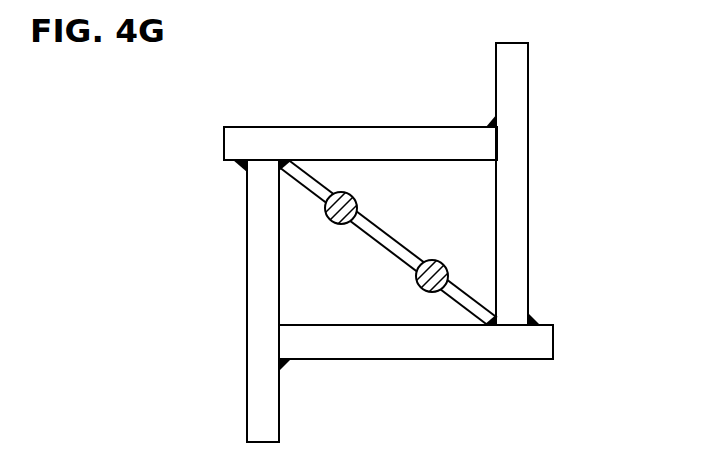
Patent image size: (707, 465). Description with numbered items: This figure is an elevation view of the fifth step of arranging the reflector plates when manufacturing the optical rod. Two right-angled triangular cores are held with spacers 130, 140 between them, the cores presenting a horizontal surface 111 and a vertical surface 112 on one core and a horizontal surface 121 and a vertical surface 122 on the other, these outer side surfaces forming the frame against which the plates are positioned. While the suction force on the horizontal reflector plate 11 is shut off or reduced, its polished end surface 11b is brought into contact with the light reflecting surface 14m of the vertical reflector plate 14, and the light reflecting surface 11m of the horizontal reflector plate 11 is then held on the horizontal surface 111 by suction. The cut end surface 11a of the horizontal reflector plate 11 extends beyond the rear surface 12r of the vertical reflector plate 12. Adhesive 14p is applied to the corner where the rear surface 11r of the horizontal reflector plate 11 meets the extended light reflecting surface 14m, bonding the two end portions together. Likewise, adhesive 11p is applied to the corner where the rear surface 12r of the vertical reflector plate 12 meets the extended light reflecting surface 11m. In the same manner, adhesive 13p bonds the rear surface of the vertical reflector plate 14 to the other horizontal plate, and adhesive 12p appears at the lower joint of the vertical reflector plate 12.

The horizontal reflector plate 11 is at (278, 148).
The cut end surface 11a is at (224, 146).
The polished end surface 11b is at (494, 147).
The light reflecting surface 11m is at (238, 167).
The adhesive 11p is at (244, 179).
The rear surface 11r is at (463, 127).
The vertical reflector plate 12 is at (262, 280).
The projection of second side member 12p is at (284, 370).
The rear surface 12r is at (247, 247).
The adhesive 13p is at (536, 318).
The vertical reflector plate 14 is at (520, 233).
The light reflecting surface 14m is at (497, 125).
The adhesive 14p is at (496, 90).
The horizontal surface 111 is at (356, 160).
The vertical surface 112 is at (497, 212).
The horizontal surface 121 is at (337, 325).
The vertical surface 122 is at (279, 278).
The spacer 130 is at (336, 192).
The spacer 140 is at (432, 292).